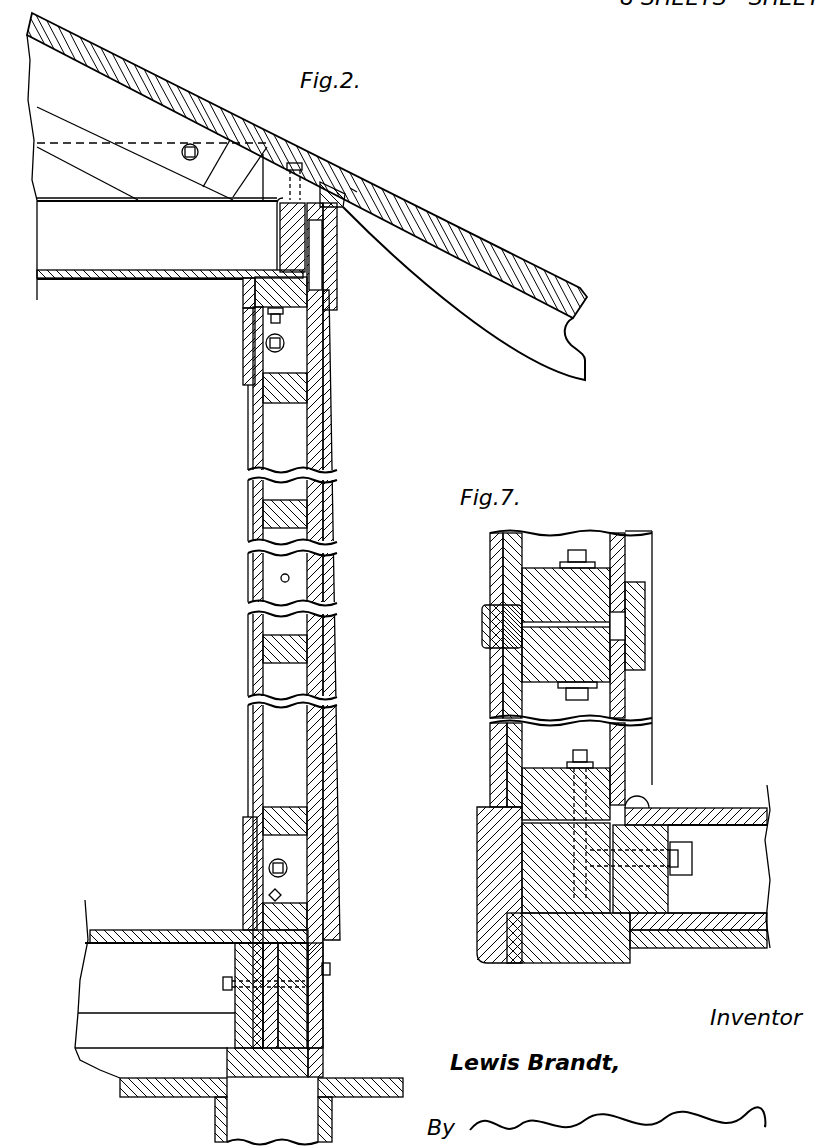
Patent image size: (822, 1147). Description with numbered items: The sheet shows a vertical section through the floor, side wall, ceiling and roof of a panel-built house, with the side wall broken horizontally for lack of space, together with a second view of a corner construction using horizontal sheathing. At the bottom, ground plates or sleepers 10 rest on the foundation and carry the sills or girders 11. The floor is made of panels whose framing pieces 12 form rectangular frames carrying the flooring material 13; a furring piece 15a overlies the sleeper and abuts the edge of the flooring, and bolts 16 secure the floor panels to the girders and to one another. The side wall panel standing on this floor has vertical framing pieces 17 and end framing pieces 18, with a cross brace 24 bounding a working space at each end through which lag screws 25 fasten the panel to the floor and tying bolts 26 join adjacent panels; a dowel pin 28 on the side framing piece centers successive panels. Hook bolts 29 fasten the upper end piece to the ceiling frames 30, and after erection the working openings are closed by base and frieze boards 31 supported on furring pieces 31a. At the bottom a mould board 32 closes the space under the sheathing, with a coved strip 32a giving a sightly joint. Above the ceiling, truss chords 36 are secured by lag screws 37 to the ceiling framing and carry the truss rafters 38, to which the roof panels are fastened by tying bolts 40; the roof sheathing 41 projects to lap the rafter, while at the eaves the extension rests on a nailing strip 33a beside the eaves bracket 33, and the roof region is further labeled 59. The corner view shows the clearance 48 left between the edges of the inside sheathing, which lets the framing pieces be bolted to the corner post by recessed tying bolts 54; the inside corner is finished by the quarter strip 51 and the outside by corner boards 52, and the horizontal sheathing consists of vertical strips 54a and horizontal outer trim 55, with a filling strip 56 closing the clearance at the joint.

In FIG. 2, the ground plates or sleepers 10 is at (240, 1062).
In FIG. 2, the sills or girders 11 is at (300, 1003).
In FIG. 2, the framing pieces 12 is at (245, 962).
In FIG. 2, the flooring materials 13 is at (152, 931).
In FIG. 2, the furring piece 15a is at (318, 937).
In FIG. 2, the bolts 16 is at (223, 984).
In FIG. 2, the vertical framing pieces 17 is at (300, 430).
In FIG. 7, the vertical framing pieces 17 is at (535, 590).
In FIG. 2, the end framing pieces 18 is at (303, 295).
In FIG. 2, the cross brace 24 is at (300, 390).
In FIG. 2, the lag screws or bolts 25 is at (270, 893).
In FIG. 2, the tying bolts 26 is at (290, 343).
In FIG. 7, the tying bolts 26 is at (582, 550).
In FIG. 2, the dowel pin 28 is at (290, 577).
In FIG. 2, the hook bolts 29 is at (276, 259).
In FIG. 2, the ceiling panel frames 30 is at (157, 224).
In FIG. 2, the base and frieze boards 31 is at (250, 336).
In FIG. 2, the furring pieces 31a is at (258, 298).
In FIG. 2, the mould board 32 is at (322, 1048).
In FIG. 2, the coved strip 32a is at (331, 970).
In FIG. 2, the bracket 33 is at (335, 254).
In FIG. 2, the nailing strip 33a is at (345, 190).
In FIG. 2, the truss chords 36 is at (250, 192).
In FIG. 2, the lag screws 37 is at (335, 185).
In FIG. 2, the truss rafters 38 is at (113, 163).
In FIG. 2, the tying bolts 40 is at (190, 145).
In FIG. 2, the roof sheathing 41 is at (288, 158).
In FIG. 7, the clearance space 48 is at (640, 625).
In FIG. 7, the quarter strip 51 is at (645, 795).
In FIG. 7, the corner boards 52 is at (560, 945).
In FIG. 7, the tying bolts 54 is at (570, 760).
In FIG. 7, the vertical strips 54a is at (510, 548).
In FIG. 7, the horizontally disposed outer trim 55 is at (495, 683).
In FIG. 7, the filling strip 56 is at (490, 633).
In FIG. 2, the roof 59 is at (307, 196).